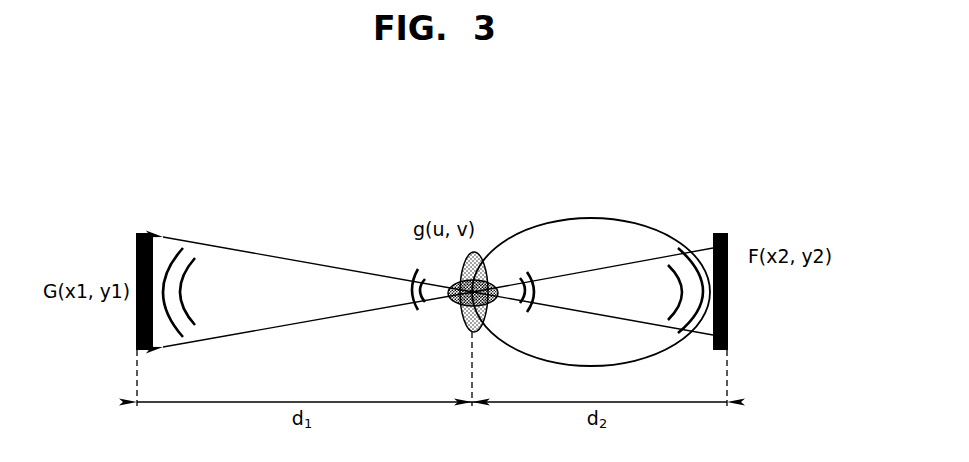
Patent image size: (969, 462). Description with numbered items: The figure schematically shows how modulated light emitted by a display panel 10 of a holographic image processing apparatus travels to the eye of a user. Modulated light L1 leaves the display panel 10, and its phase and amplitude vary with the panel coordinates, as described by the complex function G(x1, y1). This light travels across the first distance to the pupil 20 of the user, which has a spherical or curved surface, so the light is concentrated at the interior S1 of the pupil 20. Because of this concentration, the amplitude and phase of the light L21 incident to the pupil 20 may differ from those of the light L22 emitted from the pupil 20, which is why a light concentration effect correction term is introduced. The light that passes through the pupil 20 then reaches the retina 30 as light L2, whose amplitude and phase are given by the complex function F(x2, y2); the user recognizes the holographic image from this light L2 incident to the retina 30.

The display panel 10 is at (145, 233).
The pupil 20 is at (476, 254).
The retina 30 is at (720, 233).
The modulated light L1 is at (193, 270).
The light incident to the pupil L21 is at (407, 287).
The light emitted from the pupil L22 is at (537, 278).
The light incident to the retina L2 is at (667, 267).
The interior of the pupil S1 is at (459, 308).